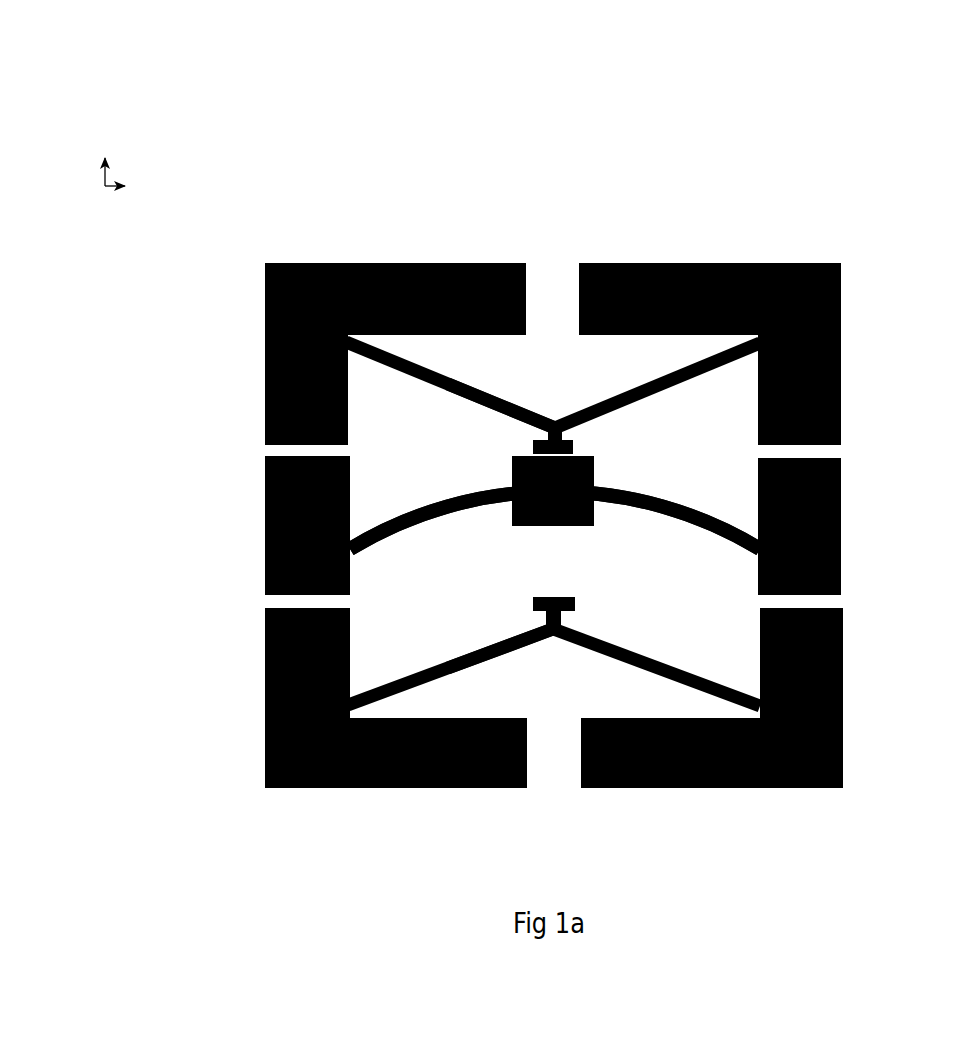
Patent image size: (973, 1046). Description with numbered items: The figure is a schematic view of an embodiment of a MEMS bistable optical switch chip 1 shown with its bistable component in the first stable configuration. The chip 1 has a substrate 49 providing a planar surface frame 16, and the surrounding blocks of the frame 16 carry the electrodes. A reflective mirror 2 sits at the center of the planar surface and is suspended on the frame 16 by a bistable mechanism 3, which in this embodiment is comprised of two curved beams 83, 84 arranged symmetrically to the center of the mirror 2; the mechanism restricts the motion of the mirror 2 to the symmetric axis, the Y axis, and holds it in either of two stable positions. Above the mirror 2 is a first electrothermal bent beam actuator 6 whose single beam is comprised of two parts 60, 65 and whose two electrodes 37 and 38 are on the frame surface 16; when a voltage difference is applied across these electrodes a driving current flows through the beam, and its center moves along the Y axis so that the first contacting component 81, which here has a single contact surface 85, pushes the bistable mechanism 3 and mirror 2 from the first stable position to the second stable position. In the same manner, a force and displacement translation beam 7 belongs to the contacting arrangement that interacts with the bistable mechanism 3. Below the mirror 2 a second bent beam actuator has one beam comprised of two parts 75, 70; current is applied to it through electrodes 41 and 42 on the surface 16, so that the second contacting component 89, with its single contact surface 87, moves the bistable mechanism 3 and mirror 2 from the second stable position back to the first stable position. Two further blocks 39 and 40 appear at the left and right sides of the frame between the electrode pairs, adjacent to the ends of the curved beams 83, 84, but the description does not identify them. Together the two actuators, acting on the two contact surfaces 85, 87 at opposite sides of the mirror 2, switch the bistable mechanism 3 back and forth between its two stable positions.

The MEMS bistable optical switch chip 1 is at (523, 142).
The reflective mirror 2 is at (502, 510).
The bistable mechanism 3 is at (462, 477).
The electrothermal actuator 6 is at (445, 363).
The force and displacement translation beam 7 is at (402, 658).
The planar surface frame 16 is at (422, 252).
The electrode 37 is at (257, 278).
The electrode 38 is at (838, 345).
The left middle anchor block 39 is at (248, 507).
The right middle anchor block 40 is at (838, 533).
The electrode 41 is at (248, 630).
The electrode 42 is at (838, 667).
The substrate 49 is at (552, 242).
The beam part of first bent beam actuator 60 is at (652, 365).
The beam part of first bent beam actuator 65 is at (493, 383).
The beam part of second bent beam actuator 70 is at (612, 662).
The beam part of second bent beam actuator 75 is at (455, 672).
The first contacting component 81 is at (565, 427).
The curved beam 83 is at (398, 493).
The curved beam 84 is at (657, 477).
The contact surface 85 is at (560, 441).
The contact surface 87 is at (547, 588).
The second contacting component 89 is at (567, 608).